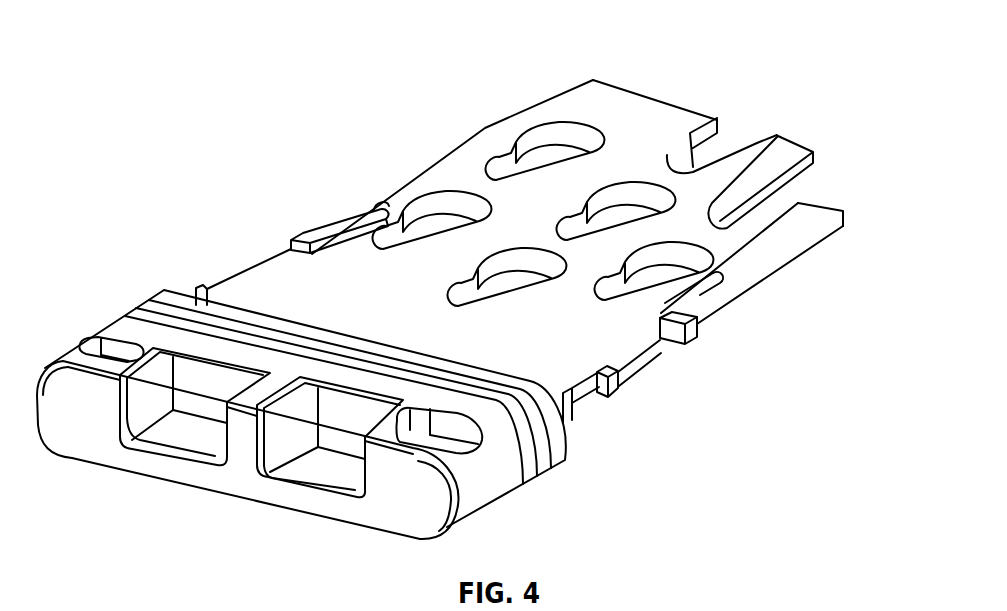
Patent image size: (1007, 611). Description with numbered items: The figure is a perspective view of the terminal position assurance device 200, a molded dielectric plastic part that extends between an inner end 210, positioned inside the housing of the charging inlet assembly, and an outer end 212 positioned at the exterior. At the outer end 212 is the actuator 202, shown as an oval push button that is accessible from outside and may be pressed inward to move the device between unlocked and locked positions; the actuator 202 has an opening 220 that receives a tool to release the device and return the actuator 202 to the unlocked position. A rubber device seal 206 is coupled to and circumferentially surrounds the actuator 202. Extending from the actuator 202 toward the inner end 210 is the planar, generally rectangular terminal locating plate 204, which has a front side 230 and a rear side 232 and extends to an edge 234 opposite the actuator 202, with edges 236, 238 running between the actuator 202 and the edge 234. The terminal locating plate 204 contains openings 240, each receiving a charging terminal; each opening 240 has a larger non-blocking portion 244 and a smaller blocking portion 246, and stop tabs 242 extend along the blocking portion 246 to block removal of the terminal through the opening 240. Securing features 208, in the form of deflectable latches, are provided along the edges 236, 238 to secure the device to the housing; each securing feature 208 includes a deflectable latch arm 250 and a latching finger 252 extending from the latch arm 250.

The terminal position assurance device 200 is at (318, 180).
The actuator 202 is at (483, 481).
The terminal locating plate 204 is at (798, 231).
The device seal 206 is at (170, 310).
The securing feature 208 is at (302, 232).
The inner end 210 is at (719, 91).
The outer end 212 is at (228, 525).
The opening 220 is at (191, 429).
The front side 230 is at (823, 210).
The rear side 232 is at (828, 238).
The edge 234 is at (795, 134).
The edge 236 is at (763, 269).
The edge 238 is at (436, 159).
The opening 240 is at (598, 79).
The stop tab 242 is at (503, 160).
The non-blocking portion 244 is at (445, 214).
The blocking portion 246 is at (393, 238).
The latch arm 250 is at (728, 294).
The latching finger 252 is at (670, 329).